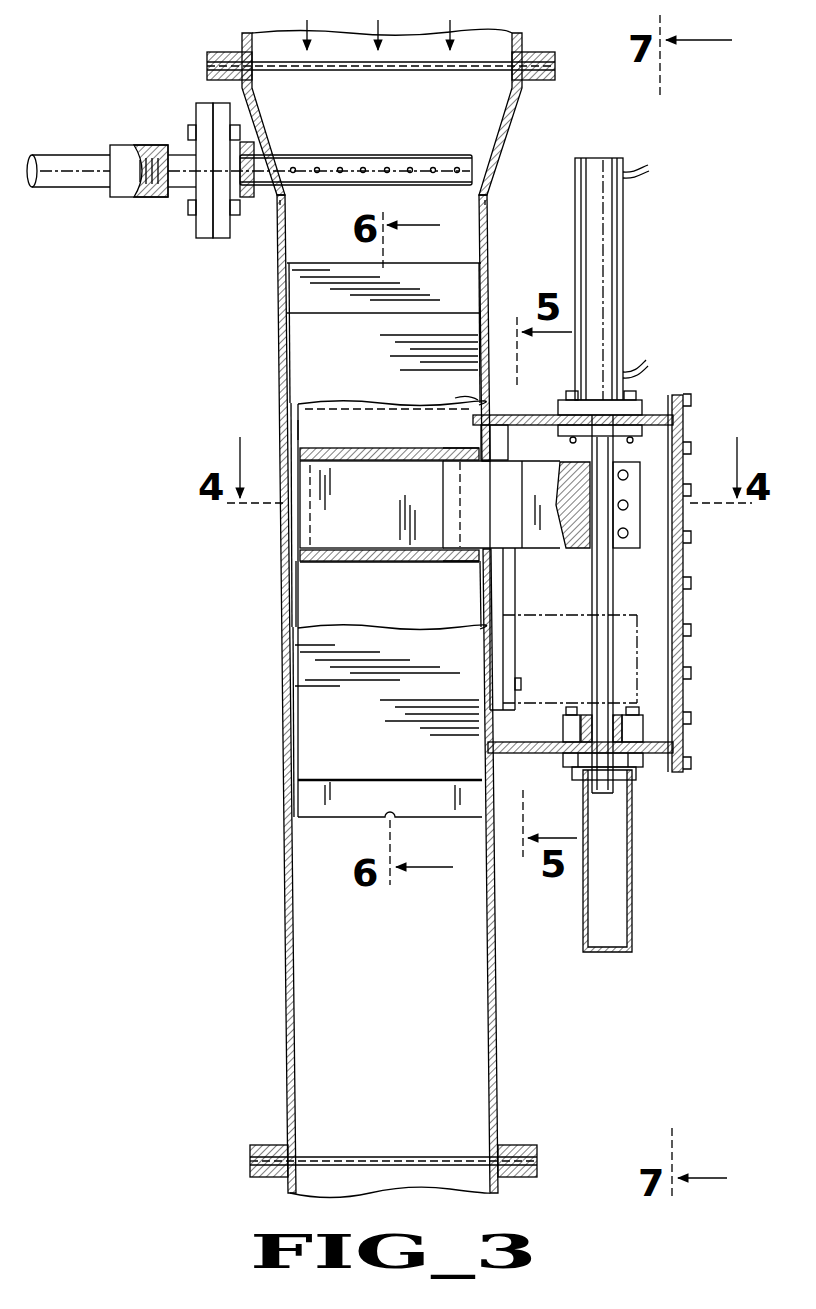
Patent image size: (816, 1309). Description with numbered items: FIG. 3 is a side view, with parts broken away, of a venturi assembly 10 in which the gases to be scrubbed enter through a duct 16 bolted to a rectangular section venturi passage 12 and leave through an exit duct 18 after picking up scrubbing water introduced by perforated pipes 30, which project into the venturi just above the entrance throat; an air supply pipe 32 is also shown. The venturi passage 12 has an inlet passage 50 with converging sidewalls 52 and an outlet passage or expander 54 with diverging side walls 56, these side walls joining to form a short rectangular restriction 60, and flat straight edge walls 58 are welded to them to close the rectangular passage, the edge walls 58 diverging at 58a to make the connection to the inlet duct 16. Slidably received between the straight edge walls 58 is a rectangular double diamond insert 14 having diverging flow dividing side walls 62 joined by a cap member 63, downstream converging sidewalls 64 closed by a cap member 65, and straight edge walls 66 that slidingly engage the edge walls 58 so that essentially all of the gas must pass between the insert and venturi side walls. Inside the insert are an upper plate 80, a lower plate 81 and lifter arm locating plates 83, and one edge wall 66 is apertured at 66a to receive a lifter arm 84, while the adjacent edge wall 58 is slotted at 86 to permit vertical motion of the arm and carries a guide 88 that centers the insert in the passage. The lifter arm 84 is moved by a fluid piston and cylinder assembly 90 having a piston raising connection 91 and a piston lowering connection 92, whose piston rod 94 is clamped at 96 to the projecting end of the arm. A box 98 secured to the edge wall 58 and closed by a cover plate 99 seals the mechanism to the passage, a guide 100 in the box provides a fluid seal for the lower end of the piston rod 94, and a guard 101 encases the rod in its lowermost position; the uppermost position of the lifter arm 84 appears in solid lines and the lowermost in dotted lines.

The venturi assembly 10 is at (193, 313).
The venturi passage 12 is at (284, 409).
The double diamond insert 14 is at (305, 374).
The duct 16 is at (243, 36).
The exit duct 18 is at (290, 1189).
The perforated pipes 30 is at (348, 153).
The air supply pipe 32 is at (90, 152).
The inlet passage 50 is at (466, 252).
The converging sidewalls 52 is at (470, 206).
The outlet passage 54 is at (332, 867).
The diverging side walls 56 is at (303, 946).
The straight edge walls 58 is at (279, 262).
The diverging portion of edge walls 58a is at (238, 99).
The rectangular restriction 60 is at (300, 424).
The diverging flow dividing side walls 62 is at (466, 410).
The cap member 63 is at (290, 279).
The downstream converging sidewalls 64 is at (303, 637).
The cap member 65 is at (300, 800).
The straight edge walls 66 is at (297, 589).
The aperture 66a is at (446, 562).
The upper plate 80 is at (335, 455).
The lower plate 81 is at (373, 562).
The lifter arm locating plates 83 is at (440, 453).
The lifter arm 84 is at (385, 517).
The slot 86 is at (500, 447).
The guide 88 is at (515, 643).
The fluid piston and cylinder assembly 90 is at (628, 265).
The piston raising connection 91 is at (647, 363).
The piston lowering connection 92 is at (651, 166).
The piston rod 94 is at (620, 453).
The clamp 96 is at (624, 518).
The box 98 is at (668, 745).
The cover plate 99 is at (686, 608).
The guide 100 is at (644, 717).
The guard 101 is at (631, 840).